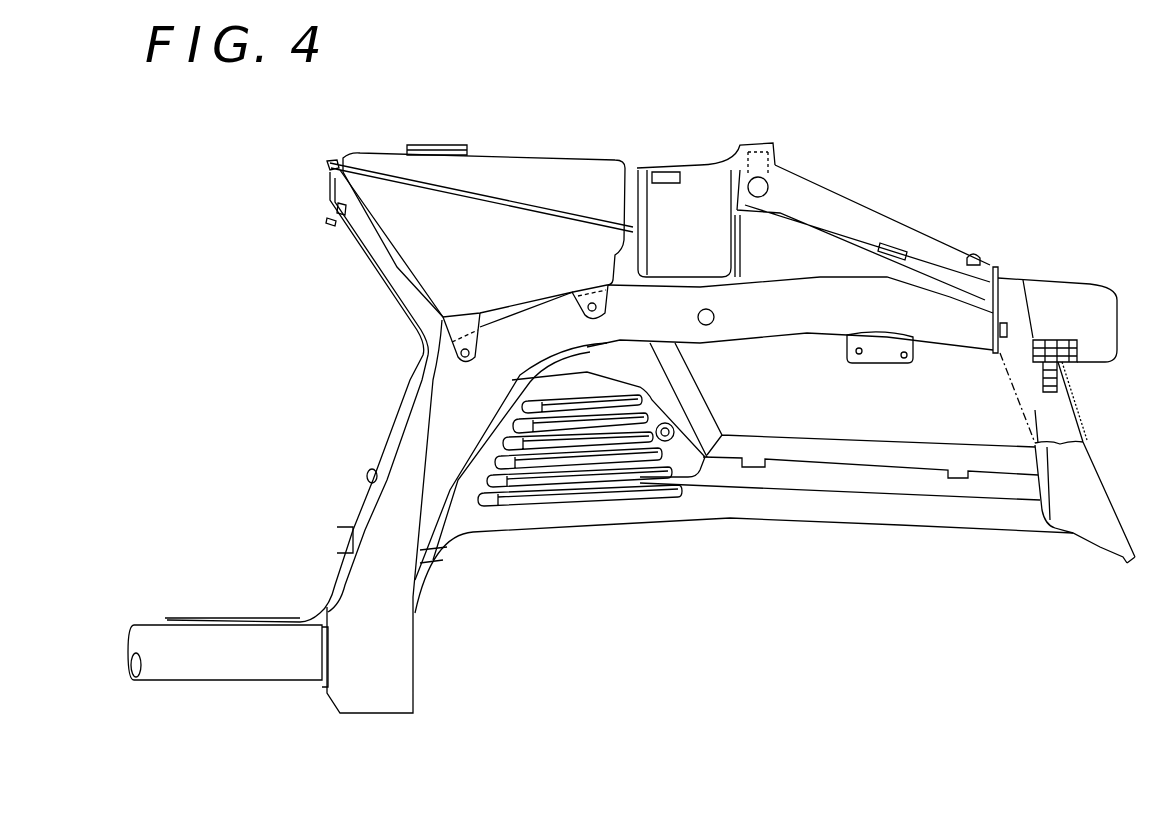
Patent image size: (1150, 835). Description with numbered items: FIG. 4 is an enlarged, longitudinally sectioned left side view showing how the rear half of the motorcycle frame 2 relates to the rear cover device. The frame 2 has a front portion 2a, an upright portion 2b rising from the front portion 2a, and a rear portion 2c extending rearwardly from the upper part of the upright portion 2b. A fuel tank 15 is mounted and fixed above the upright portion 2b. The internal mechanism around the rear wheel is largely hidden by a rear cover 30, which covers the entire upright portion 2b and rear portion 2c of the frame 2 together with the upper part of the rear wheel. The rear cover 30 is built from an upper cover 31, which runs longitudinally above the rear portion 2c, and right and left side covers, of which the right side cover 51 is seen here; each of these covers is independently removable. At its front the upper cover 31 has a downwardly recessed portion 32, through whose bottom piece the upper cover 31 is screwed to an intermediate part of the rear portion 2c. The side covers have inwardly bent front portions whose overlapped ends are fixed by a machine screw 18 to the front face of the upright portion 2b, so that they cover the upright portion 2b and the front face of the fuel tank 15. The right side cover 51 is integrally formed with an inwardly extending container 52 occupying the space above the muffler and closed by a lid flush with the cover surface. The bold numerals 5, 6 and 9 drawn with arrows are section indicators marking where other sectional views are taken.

The frame 2 is at (185, 655).
The front portion 2a is at (240, 660).
The upright portion 2b is at (420, 505).
The rear portion 2c is at (820, 330).
The fuel tank 15 is at (490, 175).
The machine screw 18 is at (372, 468).
The rear cover 30 is at (377, 284).
The upper cover 31 is at (910, 230).
The downwardly recessed portion 32 is at (683, 230).
The right side cover 51 is at (996, 405).
The container 52 is at (927, 427).
The section line V-V 5 is at (667, 150).
The section line VI-VI 6 is at (320, 452).
The engine 9 is at (900, 207).